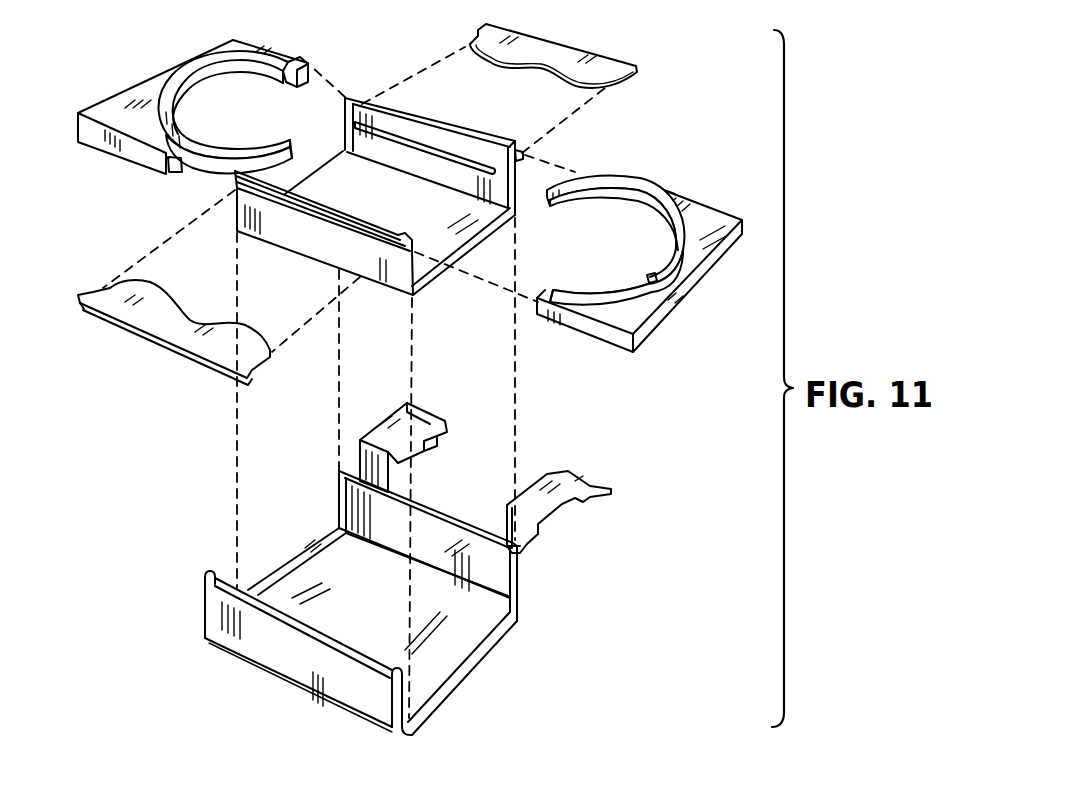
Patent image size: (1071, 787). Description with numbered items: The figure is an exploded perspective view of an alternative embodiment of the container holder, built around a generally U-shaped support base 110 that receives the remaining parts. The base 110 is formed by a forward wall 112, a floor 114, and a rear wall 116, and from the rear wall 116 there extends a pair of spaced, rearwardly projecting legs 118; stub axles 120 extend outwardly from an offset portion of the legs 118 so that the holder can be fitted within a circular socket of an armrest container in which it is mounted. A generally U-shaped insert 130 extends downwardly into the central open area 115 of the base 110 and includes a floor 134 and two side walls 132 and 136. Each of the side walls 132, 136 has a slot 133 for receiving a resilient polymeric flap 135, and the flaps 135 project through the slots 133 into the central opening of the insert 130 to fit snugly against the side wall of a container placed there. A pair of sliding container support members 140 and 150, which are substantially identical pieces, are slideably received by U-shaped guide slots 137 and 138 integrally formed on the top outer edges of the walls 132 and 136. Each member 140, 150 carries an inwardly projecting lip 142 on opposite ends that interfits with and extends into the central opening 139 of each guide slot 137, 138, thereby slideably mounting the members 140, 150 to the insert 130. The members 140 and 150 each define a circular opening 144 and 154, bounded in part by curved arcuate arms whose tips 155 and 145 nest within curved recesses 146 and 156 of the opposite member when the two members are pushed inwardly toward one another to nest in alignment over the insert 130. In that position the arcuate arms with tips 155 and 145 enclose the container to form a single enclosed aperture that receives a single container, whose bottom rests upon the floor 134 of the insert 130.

The support base 110 is at (359, 603).
The forward wall 112 is at (236, 626).
The floor 114 is at (361, 614).
The central open area 115 is at (327, 577).
The rear wall 116 is at (428, 534).
The rearwardly projecting legs 118 is at (420, 443).
The stub axles 120 is at (391, 526).
The U-shaped insert 130 is at (397, 217).
The side wall 132 is at (384, 279).
The slot 133 is at (364, 130).
The floor 134 is at (404, 214).
The resilient polymeric flaps 135 is at (590, 51).
The side wall 136 is at (520, 188).
The U-shaped guide slot 137 is at (307, 231).
The U-shaped guide slot 138 is at (522, 151).
The central opening 139 is at (335, 242).
The sliding container support member 140 is at (215, 124).
The inwardly projecting lip 142 is at (176, 172).
The circular opening 144 is at (211, 81).
The arcuate arm tip 145 is at (248, 154).
The curved recess 146 is at (289, 65).
The sliding container support member 150 is at (639, 256).
The circular opening 154 is at (643, 189).
The arcuate arm tip 155 is at (590, 197).
The curved recess 156 is at (592, 297).